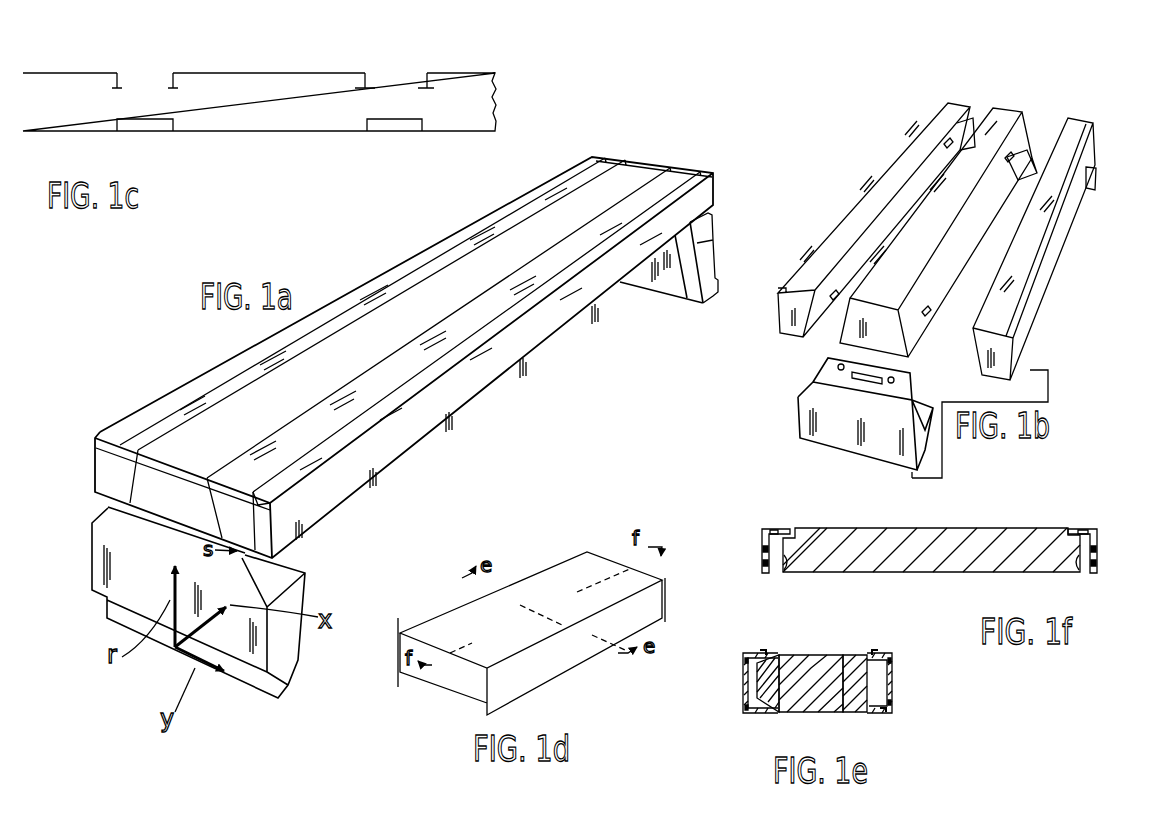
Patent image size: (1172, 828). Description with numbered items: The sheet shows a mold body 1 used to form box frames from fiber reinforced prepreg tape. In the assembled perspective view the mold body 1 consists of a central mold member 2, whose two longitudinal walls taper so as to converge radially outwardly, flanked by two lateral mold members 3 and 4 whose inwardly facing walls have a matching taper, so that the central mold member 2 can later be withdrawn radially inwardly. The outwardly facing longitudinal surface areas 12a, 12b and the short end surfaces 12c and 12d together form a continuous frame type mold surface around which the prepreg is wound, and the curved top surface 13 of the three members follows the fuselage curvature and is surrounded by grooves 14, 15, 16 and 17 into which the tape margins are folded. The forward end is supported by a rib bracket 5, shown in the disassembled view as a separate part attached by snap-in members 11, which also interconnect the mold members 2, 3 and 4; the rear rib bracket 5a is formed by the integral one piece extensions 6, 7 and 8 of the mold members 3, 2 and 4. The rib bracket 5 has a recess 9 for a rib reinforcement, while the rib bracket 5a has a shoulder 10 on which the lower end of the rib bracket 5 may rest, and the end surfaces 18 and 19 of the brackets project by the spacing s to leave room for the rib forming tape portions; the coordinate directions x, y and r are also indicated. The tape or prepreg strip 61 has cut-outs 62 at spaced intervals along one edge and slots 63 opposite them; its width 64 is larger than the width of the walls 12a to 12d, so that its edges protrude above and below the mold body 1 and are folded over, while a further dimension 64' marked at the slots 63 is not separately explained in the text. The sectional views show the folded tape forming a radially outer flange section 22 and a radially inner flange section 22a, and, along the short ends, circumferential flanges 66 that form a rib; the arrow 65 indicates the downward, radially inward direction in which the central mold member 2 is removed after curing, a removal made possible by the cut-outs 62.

In FIG. 1A, the mold body 1 is at (347, 270).
In FIG. 1D, the mold body 1 is at (515, 629).
In FIG. 1A, the central mold member 2 is at (645, 158).
In FIG. 1B, the central mold member 2 is at (978, 250).
In FIG. 1E, the central mold member 2 is at (828, 660).
In FIG. 1F, the central mold member 2 is at (905, 540).
In FIG. 1A, the lateral mold member 3 is at (178, 388).
In FIG. 1B, the lateral mold member 3 is at (865, 178).
In FIG. 1E, the lateral mold member 3 is at (757, 708).
In FIG. 1A, the lateral mold member 4 is at (498, 380).
In FIG. 1B, the lateral mold member 4 is at (1050, 302).
In FIG. 1E, the lateral mold member 4 is at (856, 712).
In FIG. 1A, the rib bracket 5 is at (92, 580).
In FIG. 1B, the rib bracket 5 is at (797, 425).
In FIG. 1A, the second rib bracket 5a is at (722, 252).
In FIG. 1B, the extension 6 is at (961, 160).
In FIG. 1A, the extension 7 is at (657, 285).
In FIG. 1B, the extension 7 is at (1015, 180).
In FIG. 1A, the extension 8 is at (703, 303).
In FIG. 1B, the extension 8 is at (1097, 168).
In FIG. 1A, the recess 9 is at (243, 678).
In FIG. 1A, the shoulder 10 is at (720, 275).
In FIG. 1B, the snap-in members 11 is at (945, 143).
In FIG. 1A, the longitudinal outwardly facing surface area 12a is at (553, 322).
In FIG. 1E, the longitudinal outwardly facing surface area 12a is at (880, 683).
In FIG. 1A, the longitudinal outwardly facing surface area 12b is at (100, 440).
In FIG. 1E, the longitudinal outwardly facing surface area 12b is at (752, 683).
In FIG. 1A, the short end surface 12c is at (172, 445).
In FIG. 1F, the short end surface 12c is at (783, 565).
In FIG. 1A, the short end surface 12d is at (665, 158).
In FIG. 1F, the short end surface 12d is at (1078, 565).
In FIG. 1A, the top surface 13 is at (466, 304).
In FIG. 1A, the groove 14 is at (350, 448).
In FIG. 1E, the groove 14 is at (888, 656).
In FIG. 1A, the groove 15 is at (690, 168).
In FIG. 1F, the groove 15 is at (1098, 540).
In FIG. 1A, the groove 16 is at (483, 214).
In FIG. 1E, the groove 16 is at (770, 660).
In FIG. 1A, the groove 17 is at (102, 450).
In FIG. 1F, the groove 17 is at (776, 528).
In FIG. 1A, the end surface 18 is at (146, 576).
In FIG. 1A, the end surface 19 is at (716, 222).
In FIG. 1E, the flange section 22 is at (762, 652).
In FIG. 1E, the flange section 22a is at (884, 712).
In FIG. 1C, the prepreg strip 61 is at (277, 85).
In FIG. 1D, the prepreg strip 61 is at (548, 672).
In FIG. 1E, the prepreg strip 61 is at (745, 662).
In FIG. 1F, the prepreg strip 61 is at (762, 556).
In FIG. 1C, the cut-outs 62 is at (145, 121).
In FIG. 1D, the cut-outs 62 is at (447, 693).
In FIG. 1E, the cut-outs 62 is at (699, 637).
In FIG. 1C, the slots 63 is at (170, 82).
In FIG. 1D, the slots 63 is at (400, 633).
In FIG. 1C, the width 64 is at (535, 102).
In FIG. 1C, the notch depth 64' is at (429, 103).
In FIG. 1A, the notch depth 64' is at (186, 492).
In FIG. 1F, the arrow 65 is at (847, 586).
In FIG. 1F, the circumferential flanges 66 is at (762, 531).